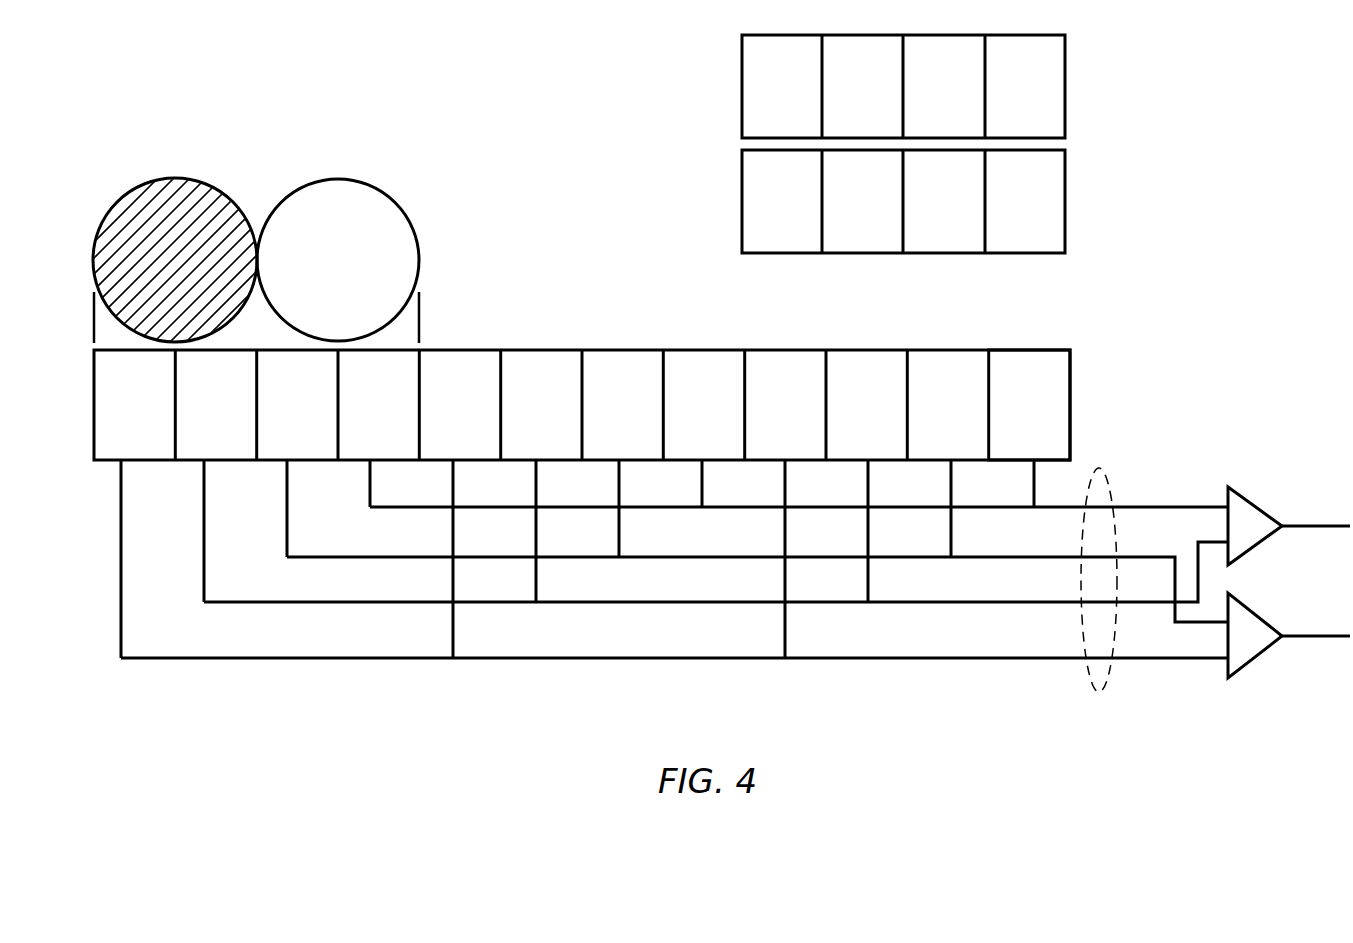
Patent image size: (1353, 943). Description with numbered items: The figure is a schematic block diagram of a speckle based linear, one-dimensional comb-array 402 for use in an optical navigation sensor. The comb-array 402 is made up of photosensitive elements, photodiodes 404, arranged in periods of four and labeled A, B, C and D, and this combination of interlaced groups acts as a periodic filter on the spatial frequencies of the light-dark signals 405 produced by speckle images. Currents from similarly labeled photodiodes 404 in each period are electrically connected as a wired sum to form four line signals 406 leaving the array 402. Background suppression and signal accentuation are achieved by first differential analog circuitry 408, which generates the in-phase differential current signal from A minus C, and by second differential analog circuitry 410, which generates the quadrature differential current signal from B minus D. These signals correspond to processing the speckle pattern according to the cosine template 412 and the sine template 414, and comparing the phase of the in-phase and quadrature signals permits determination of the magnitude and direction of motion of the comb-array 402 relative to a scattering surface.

The 1D comb-array 402 is at (633, 381).
The photodiode 404 is at (1026, 352).
The light-dark signals 405 is at (431, 258).
The line signals 406 is at (1093, 478).
The first differential analog circuitry 408 is at (1250, 661).
The second differential analog circuitry 410 is at (1248, 491).
The cosine template 412 is at (643, 85).
The sine template 414 is at (643, 193).